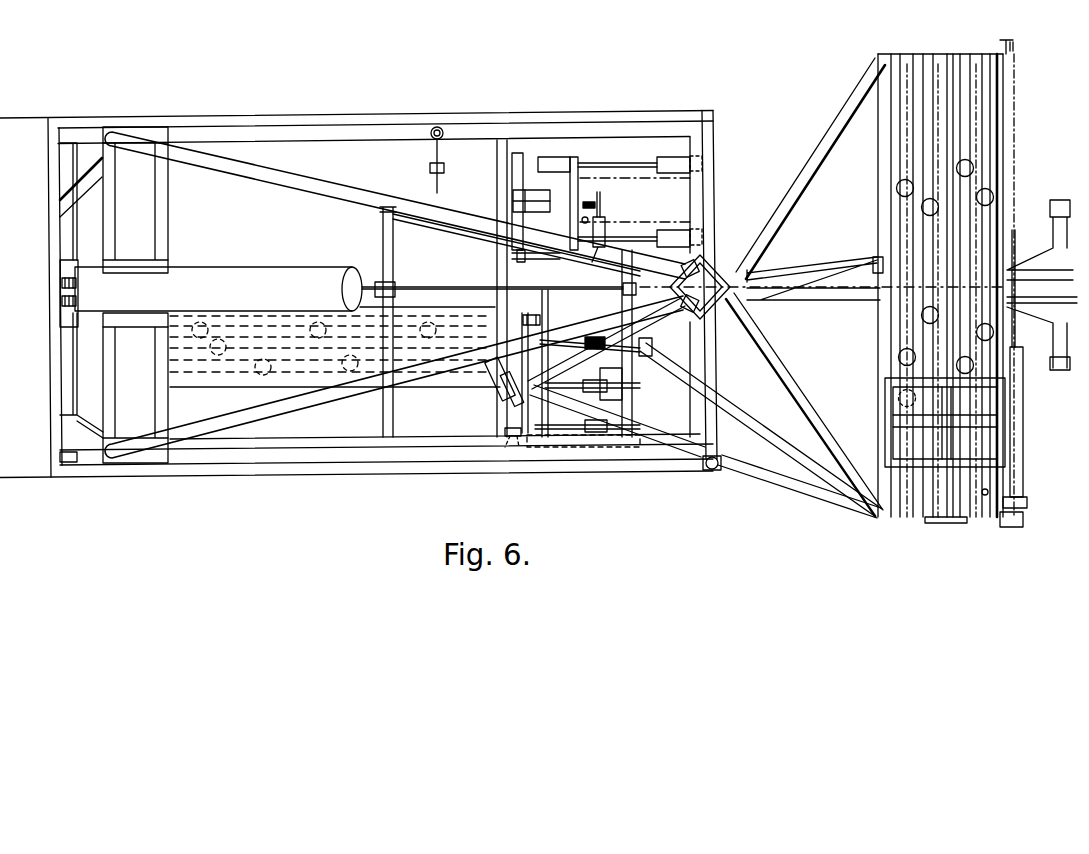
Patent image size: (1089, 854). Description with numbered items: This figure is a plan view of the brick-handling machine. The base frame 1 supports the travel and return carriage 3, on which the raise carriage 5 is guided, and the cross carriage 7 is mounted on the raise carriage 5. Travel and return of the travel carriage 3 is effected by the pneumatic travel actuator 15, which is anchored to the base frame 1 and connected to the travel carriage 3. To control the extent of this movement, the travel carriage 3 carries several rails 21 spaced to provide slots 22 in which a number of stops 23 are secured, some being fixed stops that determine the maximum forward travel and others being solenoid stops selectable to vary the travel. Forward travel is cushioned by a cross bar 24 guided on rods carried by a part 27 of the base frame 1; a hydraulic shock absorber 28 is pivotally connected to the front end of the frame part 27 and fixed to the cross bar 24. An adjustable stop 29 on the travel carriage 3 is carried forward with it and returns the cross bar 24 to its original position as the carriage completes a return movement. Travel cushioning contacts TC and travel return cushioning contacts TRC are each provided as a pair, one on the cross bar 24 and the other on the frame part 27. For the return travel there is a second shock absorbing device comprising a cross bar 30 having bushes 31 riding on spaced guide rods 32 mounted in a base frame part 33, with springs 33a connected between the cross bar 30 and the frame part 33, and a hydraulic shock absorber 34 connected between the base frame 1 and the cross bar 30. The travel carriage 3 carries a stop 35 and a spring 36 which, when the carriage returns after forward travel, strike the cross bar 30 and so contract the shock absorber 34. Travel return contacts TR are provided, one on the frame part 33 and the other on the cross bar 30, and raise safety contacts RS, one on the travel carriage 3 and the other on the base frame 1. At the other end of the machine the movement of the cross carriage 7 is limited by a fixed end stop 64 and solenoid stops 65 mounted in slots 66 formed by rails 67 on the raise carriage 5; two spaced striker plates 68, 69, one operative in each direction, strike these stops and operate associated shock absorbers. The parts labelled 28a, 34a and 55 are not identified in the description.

The base frame 1 is at (388, 166).
The travel and return carriage 3 is at (628, 282).
The raise carriage 5 is at (815, 147).
The cross carriage 7 is at (1000, 429).
The pneumatic travel actuator 15 is at (238, 272).
The rails 21 is at (206, 312).
The slots 22 is at (238, 372).
The stops 23 is at (353, 393).
The cross bar 24 is at (520, 409).
The frame part 27 is at (630, 410).
The hydraulic shock absorber 28 is at (662, 380).
The strut pivot joint 28a is at (718, 469).
The adjustable stop 29 is at (535, 315).
The cross bar 30 is at (573, 155).
The bushes 31 is at (548, 152).
The guide rods 32 is at (600, 160).
The base frame part 33 is at (512, 166).
The springs 33a is at (645, 224).
The hydraulic shock absorber 34 is at (455, 210).
The eye bolt 34a is at (437, 127).
The stop 35 is at (592, 224).
The spring 36 is at (597, 200).
The ground wheel bar 55 is at (1022, 474).
The fixed end stop 64 is at (985, 495).
The solenoid stops 65 is at (987, 195).
The slots 66 is at (963, 83).
The rails 67 is at (997, 138).
The striker plate 68 is at (993, 393).
The striker plate 69 is at (995, 412).
The travel return electrical contacts TR is at (553, 197).
The raise safety electrical contacts RS is at (520, 260).
The travel cushioning electrical contacts TC is at (510, 432).
The travel return cushioning electrical contacts TRC is at (570, 447).